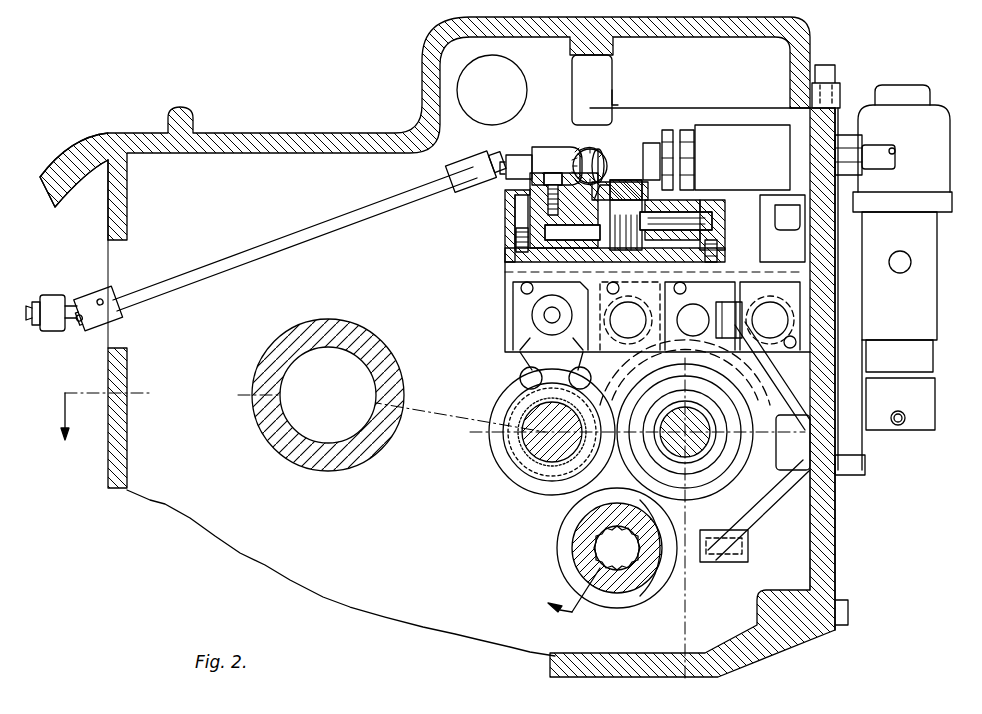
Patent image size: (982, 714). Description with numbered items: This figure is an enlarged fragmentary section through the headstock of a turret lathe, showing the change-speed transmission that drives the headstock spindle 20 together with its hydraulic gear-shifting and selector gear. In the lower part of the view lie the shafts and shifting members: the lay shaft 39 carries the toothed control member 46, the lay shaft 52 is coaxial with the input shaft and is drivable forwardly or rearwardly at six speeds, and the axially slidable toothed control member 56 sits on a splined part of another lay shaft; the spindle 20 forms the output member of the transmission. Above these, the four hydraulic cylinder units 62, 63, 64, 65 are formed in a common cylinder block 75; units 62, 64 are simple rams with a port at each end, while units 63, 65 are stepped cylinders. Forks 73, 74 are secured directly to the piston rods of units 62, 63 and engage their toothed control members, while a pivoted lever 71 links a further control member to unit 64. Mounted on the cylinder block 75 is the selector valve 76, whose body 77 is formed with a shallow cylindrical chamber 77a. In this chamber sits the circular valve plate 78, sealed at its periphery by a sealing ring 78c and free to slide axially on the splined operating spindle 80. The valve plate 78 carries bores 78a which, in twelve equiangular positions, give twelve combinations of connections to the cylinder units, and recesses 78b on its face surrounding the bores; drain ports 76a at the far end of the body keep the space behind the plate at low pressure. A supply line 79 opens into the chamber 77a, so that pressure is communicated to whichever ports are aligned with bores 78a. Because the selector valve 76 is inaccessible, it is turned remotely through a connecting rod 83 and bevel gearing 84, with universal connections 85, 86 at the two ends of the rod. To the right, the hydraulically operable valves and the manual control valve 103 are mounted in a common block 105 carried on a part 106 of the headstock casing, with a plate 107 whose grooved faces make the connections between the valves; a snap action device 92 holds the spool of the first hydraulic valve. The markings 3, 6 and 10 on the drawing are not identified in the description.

The section line 3- 3 is at (329, 501).
The adjusting screw / section indicator 6 is at (492, 248).
The housing / axis 10 is at (700, 684).
The headstock spindle 20 is at (346, 338).
The lay shaft 39 is at (600, 530).
The toothed control member 46 is at (585, 556).
The lay shaft 52 is at (697, 442).
The toothed control member 56 is at (530, 462).
The hydraulic cylinder unit 62 is at (520, 316).
The hydraulic cylinder unit 63 is at (528, 340).
The hydraulic cylinder unit 64 is at (705, 322).
The hydraulic cylinder unit 65 is at (770, 318).
The pivoted lever 71 is at (762, 492).
The fork 73 is at (503, 392).
The fork 74 is at (745, 340).
The cylinder block 75 is at (500, 306).
The selector valve 76 is at (506, 215).
The drain ports 76a is at (512, 247).
The body 77 is at (528, 176).
The cylindrical chamber 77a is at (672, 215).
The valve plate 78 is at (572, 238).
The bores 78a is at (656, 220).
The recesses 78b is at (576, 165).
The sealing ring 78c is at (728, 202).
The supply line 79 is at (853, 228).
The splined operating spindle 80 is at (622, 206).
The connecting rod 83 is at (260, 247).
The bevel gearing 84 is at (604, 156).
The connection 85 is at (78, 300).
The connection 86 is at (492, 160).
The snap action device 92 is at (900, 398).
The manual control valve 103 is at (757, 132).
The common block 105 is at (922, 304).
The part of headstock casing 106 is at (828, 500).
The plate 107 is at (852, 456).